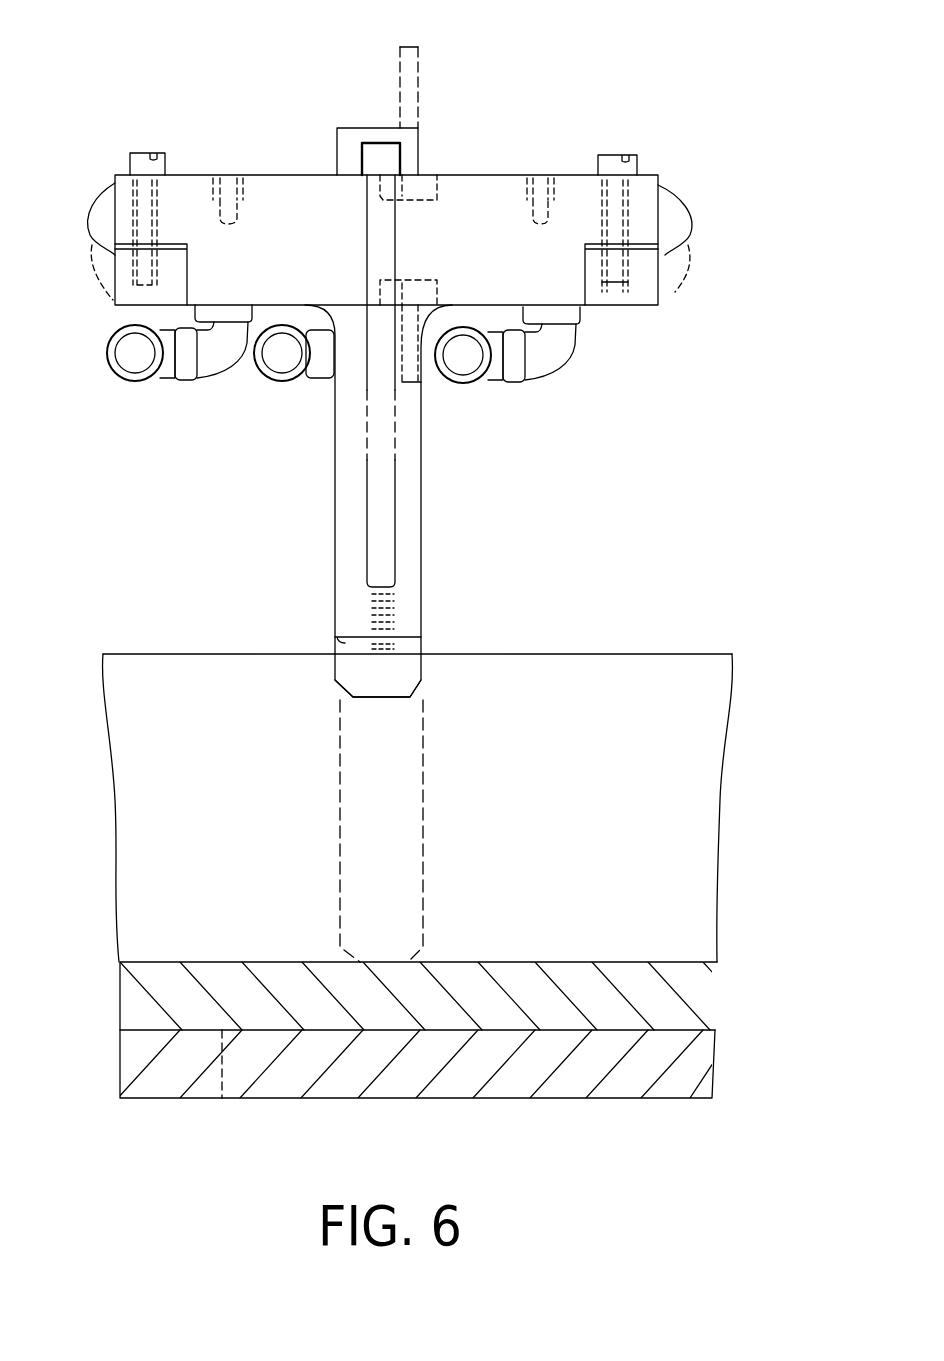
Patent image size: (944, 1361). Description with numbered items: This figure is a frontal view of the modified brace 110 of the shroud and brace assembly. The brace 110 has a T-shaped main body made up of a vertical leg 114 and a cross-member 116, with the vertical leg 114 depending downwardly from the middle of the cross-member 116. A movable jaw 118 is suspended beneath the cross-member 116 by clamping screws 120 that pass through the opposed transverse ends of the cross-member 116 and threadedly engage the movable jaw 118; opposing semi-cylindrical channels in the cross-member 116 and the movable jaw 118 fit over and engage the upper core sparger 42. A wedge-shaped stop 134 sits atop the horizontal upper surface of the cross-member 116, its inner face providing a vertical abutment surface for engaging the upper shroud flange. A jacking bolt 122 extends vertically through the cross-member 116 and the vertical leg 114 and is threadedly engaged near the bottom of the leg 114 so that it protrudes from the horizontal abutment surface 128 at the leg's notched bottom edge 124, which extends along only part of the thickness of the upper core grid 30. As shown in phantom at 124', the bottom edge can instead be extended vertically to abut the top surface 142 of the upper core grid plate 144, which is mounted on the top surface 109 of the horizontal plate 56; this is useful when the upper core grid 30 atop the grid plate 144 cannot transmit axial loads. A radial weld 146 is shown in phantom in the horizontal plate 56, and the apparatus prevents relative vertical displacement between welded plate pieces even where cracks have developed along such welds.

The modified brace 110 is at (507, 79).
The cross-member 116 is at (510, 174).
The clamping screws 120 is at (128, 162).
The wedge-shaped stop 134 is at (357, 128).
The movable jaw 118 is at (665, 300).
The core sparger 42 is at (113, 305).
The vertical leg 114 is at (423, 515).
The jacking bolt 122 is at (367, 529).
The horizontal abutment surface 128 is at (336, 643).
The bottom edge 124 is at (430, 658).
The extended bottom edge 124' is at (444, 831).
The upper core grid 30 is at (643, 654).
The top surface 142 is at (670, 965).
The top surface 109 is at (675, 1032).
The upper core grid plate 144 is at (158, 961).
The radial weld 146 is at (220, 1052).
The horizontal plate 56 is at (618, 1100).